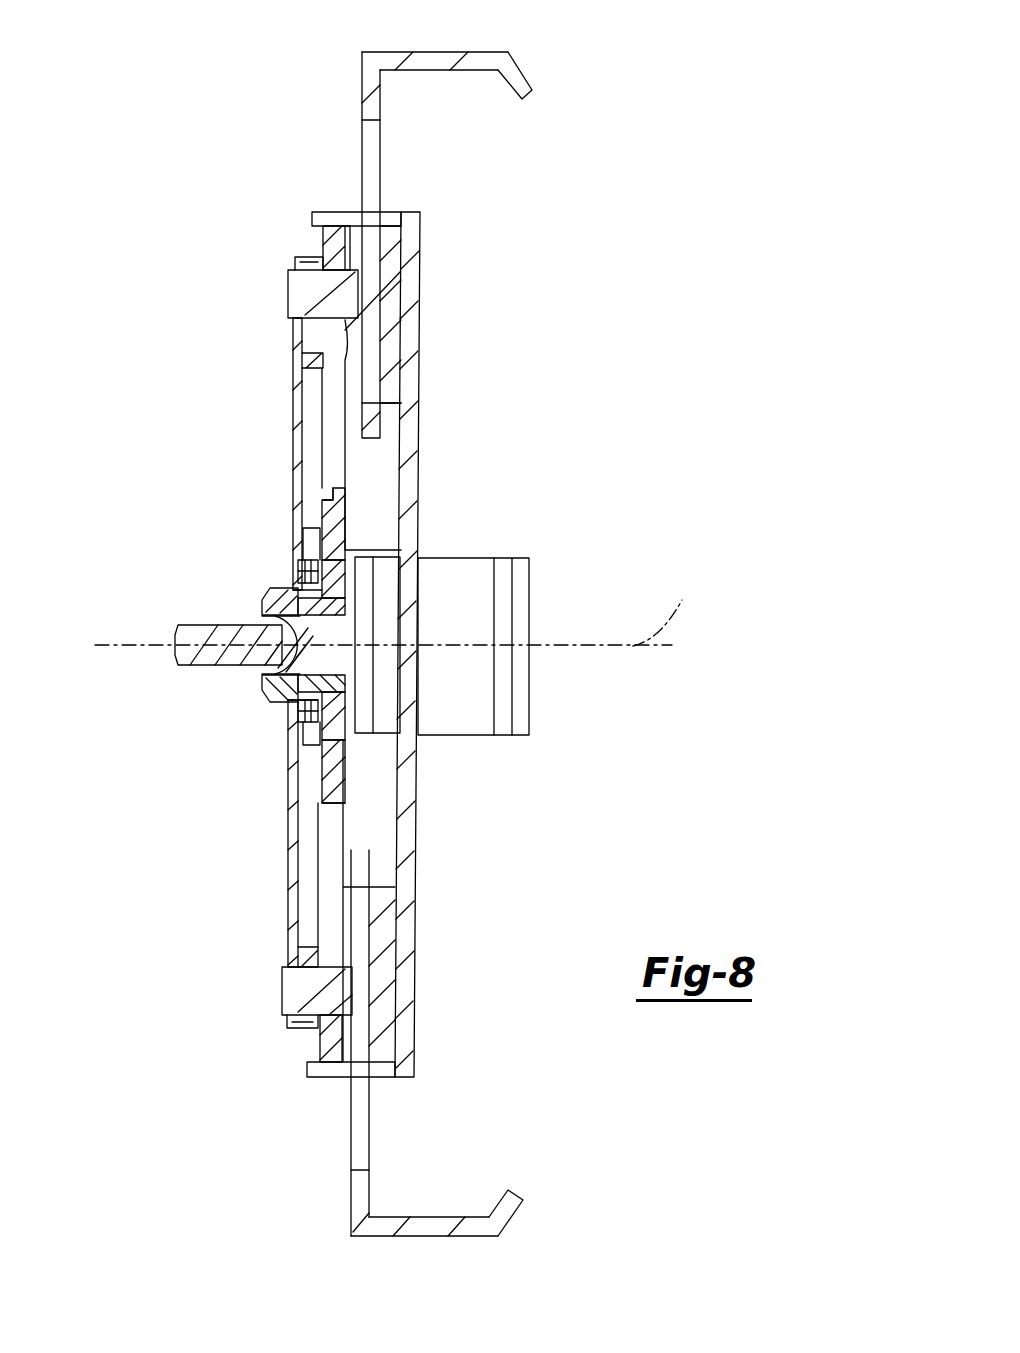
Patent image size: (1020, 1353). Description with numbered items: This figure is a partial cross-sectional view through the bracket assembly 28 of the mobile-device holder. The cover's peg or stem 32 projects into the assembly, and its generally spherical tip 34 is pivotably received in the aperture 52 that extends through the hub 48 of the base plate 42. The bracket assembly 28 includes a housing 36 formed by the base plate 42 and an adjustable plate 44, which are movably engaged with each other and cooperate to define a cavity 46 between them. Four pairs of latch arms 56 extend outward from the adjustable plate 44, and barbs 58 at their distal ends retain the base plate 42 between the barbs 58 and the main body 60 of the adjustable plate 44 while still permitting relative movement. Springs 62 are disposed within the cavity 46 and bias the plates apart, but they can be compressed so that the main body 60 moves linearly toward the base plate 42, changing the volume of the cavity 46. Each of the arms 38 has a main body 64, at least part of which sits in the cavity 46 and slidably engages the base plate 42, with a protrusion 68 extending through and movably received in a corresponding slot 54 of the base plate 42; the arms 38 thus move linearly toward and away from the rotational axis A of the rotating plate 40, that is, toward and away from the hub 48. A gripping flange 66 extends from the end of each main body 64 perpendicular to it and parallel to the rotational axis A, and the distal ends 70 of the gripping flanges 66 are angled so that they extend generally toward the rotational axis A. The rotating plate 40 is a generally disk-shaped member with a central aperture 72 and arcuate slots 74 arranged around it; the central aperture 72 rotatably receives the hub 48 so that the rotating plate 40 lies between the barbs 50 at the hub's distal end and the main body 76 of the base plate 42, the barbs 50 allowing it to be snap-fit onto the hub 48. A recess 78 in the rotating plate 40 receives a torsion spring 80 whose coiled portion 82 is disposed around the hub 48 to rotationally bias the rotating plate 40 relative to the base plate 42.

The bracket assembly 28 is at (170, 103).
The stem 32 is at (190, 652).
The spherical tip 34 is at (282, 632).
The housing 36 is at (413, 633).
The arms 38 is at (442, 648).
The rotating plate 40 is at (291, 437).
The base plate 42 is at (319, 778).
The adjustable plate 44 is at (422, 241).
The cavity 46 is at (383, 457).
The hub 48 is at (305, 603).
The barbs 50 is at (293, 693).
The aperture 52 is at (330, 663).
The slots 54 is at (330, 488).
The latch arms 56 is at (325, 212).
The barbs 58 is at (323, 240).
The main body 60 is at (407, 830).
The springs 62 is at (397, 283).
The main body 64 is at (360, 87).
The gripping flange 66 is at (445, 62).
The protrusion 68 is at (300, 296).
The distal ends 70 is at (530, 72).
The central aperture 72 is at (300, 668).
The arcuate slots 74 is at (300, 345).
The main body 76 is at (335, 512).
The recess 78 is at (305, 755).
The torsion spring 80 is at (300, 565).
The coiled portion 82 is at (305, 722).
The rotational axis A is at (670, 614).